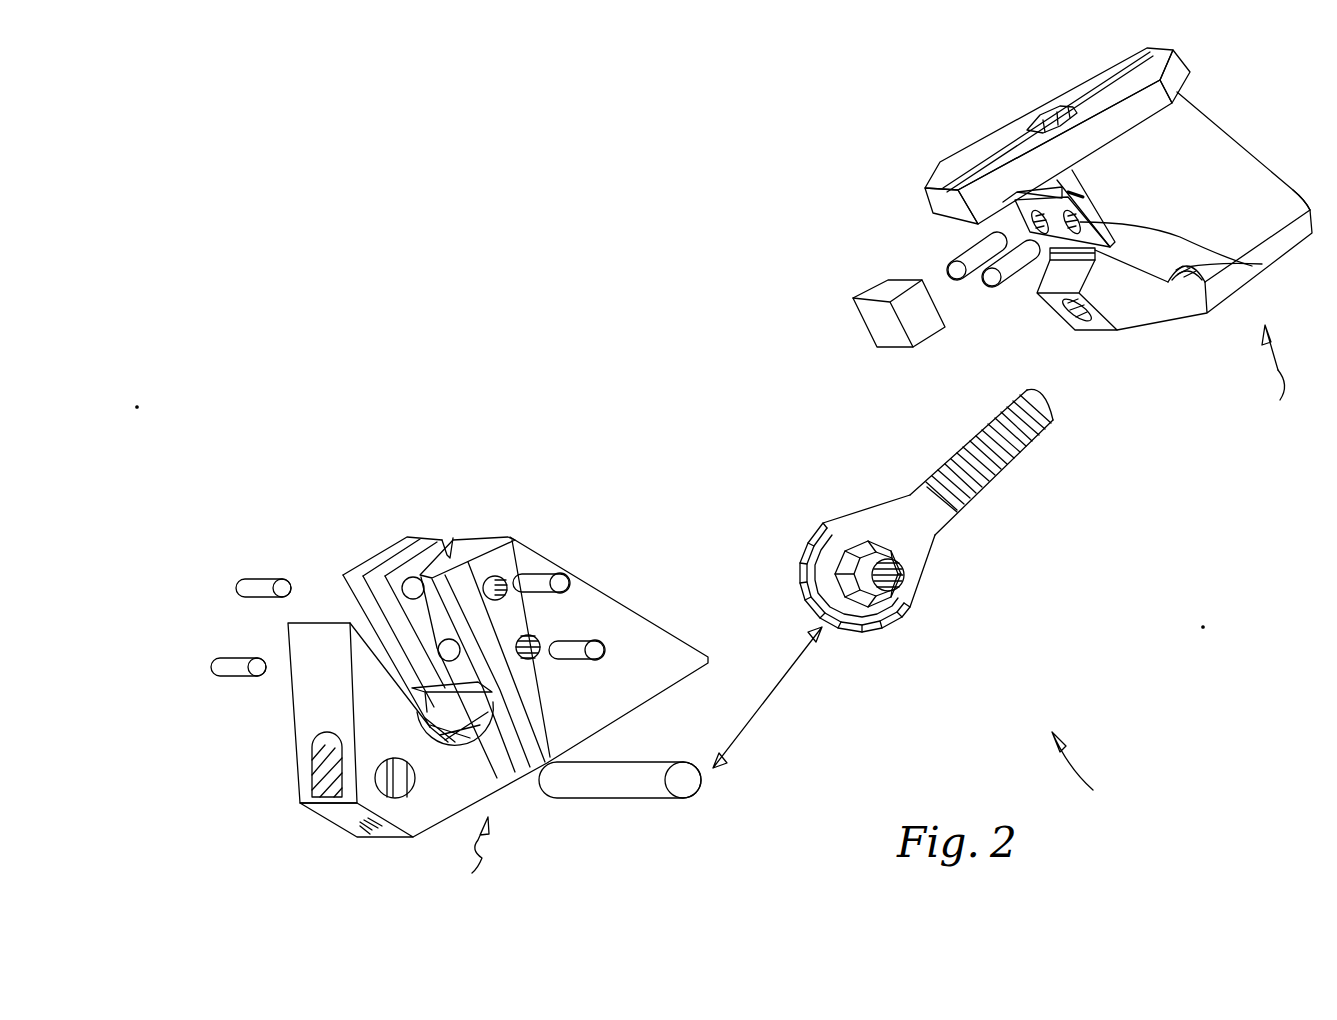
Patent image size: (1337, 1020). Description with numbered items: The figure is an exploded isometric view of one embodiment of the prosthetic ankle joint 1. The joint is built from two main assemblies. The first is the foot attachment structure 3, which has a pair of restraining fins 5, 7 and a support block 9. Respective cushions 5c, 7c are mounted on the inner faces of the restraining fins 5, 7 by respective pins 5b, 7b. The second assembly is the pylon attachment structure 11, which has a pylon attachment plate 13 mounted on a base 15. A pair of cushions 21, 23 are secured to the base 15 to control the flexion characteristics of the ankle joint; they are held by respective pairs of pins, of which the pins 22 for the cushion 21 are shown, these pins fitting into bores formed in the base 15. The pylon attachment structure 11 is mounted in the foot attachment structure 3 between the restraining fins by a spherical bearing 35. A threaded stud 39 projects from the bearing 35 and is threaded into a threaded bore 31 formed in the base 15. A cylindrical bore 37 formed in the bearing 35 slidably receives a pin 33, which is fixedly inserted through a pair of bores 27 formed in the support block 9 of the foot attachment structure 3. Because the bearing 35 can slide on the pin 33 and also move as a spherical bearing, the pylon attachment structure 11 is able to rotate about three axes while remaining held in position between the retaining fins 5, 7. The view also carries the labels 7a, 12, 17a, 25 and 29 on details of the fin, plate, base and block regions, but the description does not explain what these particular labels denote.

The prosthetic ankle joint 1 is at (1078, 771).
The foot attachment structure 3 is at (638, 766).
The restraining fin 5 is at (585, 610).
The pins 5b is at (565, 595).
The cushion 5c is at (480, 537).
The restraining fin 7 is at (450, 557).
The clamp wedge 7a is at (449, 650).
The pins 7b is at (222, 662).
The cushion 7c is at (397, 562).
The support block 9 is at (327, 682).
The pylon attachment structure 11 is at (1280, 379).
The notch 12 is at (456, 505).
The pylon attachment plate 13 is at (1002, 137).
The base 15 is at (1193, 168).
The locating projection 17a is at (1191, 252).
The cushion 21 is at (880, 330).
The pins 22 is at (998, 270).
The cushion 23 is at (1292, 238).
The bottom face 25 is at (330, 813).
The bores 27 is at (390, 765).
The nut 29 is at (1043, 122).
The threaded bore 31 is at (1075, 330).
The pin 33 is at (648, 793).
The spherical bearing 35 is at (888, 540).
The cylindrical bore 37 is at (895, 598).
The threaded stud 39 is at (922, 487).